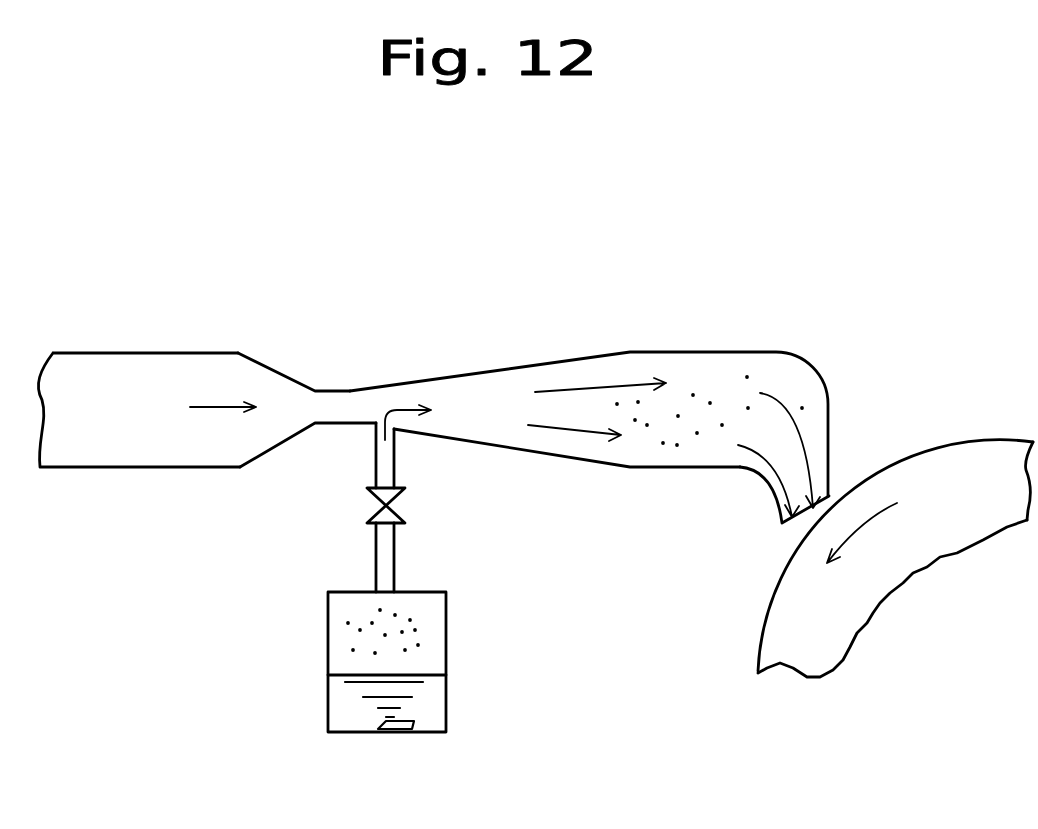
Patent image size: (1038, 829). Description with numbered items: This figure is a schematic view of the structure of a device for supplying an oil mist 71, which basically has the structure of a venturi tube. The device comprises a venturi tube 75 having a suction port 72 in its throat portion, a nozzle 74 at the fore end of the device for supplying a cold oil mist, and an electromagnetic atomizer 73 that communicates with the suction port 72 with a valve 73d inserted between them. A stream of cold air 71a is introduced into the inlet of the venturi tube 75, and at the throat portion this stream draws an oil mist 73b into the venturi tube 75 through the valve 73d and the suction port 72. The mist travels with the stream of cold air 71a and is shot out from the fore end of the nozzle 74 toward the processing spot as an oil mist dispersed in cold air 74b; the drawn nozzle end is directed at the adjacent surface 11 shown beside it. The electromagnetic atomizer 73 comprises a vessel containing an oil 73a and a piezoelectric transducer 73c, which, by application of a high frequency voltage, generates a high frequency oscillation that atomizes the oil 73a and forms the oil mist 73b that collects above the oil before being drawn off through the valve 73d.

The roll 11 is at (987, 443).
The device for supplying an oil mist 71 is at (230, 336).
The stream of cold air 71a is at (213, 409).
The suction port 72 is at (378, 423).
The electromagnetic atomizer 73 is at (305, 638).
The oil 73a is at (432, 707).
The oil mist 73b is at (427, 622).
The piezoelectric transducer 73c is at (403, 733).
The valve 73d is at (400, 503).
The nozzle 74 is at (748, 352).
The oil mist dispersed in cold air 74b is at (740, 468).
The venturi tube 75 is at (79, 353).